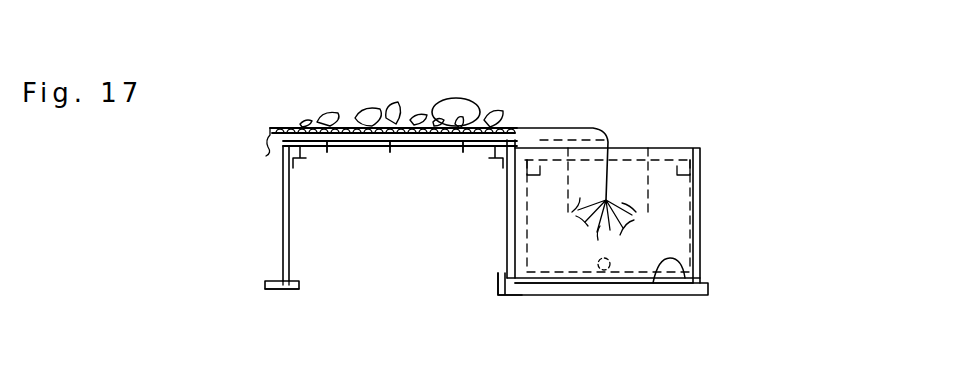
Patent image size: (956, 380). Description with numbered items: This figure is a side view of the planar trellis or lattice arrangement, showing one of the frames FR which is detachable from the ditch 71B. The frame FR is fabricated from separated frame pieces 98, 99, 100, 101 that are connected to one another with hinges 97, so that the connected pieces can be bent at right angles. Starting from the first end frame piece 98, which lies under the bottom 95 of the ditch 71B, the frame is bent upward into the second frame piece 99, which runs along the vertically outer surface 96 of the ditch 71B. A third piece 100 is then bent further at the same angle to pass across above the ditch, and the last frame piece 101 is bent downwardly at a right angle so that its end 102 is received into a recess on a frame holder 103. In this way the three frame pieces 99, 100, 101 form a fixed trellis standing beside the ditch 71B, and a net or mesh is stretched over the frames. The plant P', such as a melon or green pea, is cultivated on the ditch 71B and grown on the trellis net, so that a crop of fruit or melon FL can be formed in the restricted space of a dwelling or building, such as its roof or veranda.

The ditch 71B is at (703, 228).
The bottom of the ditch 95 is at (674, 276).
The vertically outer-surface of the ditch 96 is at (517, 207).
The hinge 97 is at (294, 158).
The first end frame piece 98 is at (547, 294).
The second frame piece 99 is at (506, 248).
The third frame piece 100 is at (408, 150).
The last frame piece 101 is at (287, 223).
The end of the last frame piece 102 is at (275, 281).
The frame holder 103 is at (281, 289).
The fruit or melon FL is at (478, 108).
The plant P' is at (401, 88).
The frame FR is at (267, 195).